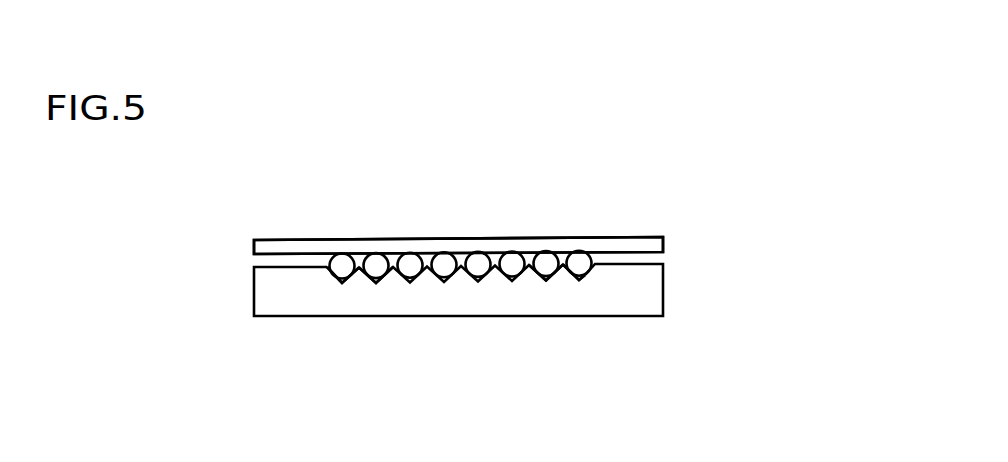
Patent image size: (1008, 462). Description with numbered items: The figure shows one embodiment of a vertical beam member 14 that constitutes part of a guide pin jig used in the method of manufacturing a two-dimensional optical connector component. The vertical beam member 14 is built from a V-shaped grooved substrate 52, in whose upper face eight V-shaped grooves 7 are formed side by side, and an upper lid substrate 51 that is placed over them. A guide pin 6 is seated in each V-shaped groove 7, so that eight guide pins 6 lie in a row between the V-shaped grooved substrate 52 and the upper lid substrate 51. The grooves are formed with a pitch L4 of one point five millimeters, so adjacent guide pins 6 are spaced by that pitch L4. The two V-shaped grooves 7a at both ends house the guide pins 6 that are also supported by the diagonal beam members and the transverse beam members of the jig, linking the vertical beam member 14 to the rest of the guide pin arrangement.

The vertical beam member 14 is at (713, 195).
The upper lid substrate 51 is at (620, 238).
The V-shaped grooved substrate 52 is at (622, 292).
The guide pin 6 is at (477, 268).
The V-shaped groove 7 is at (535, 275).
The V-shaped groove at both ends 7a is at (330, 275).
The pitch L4 is at (376, 268).